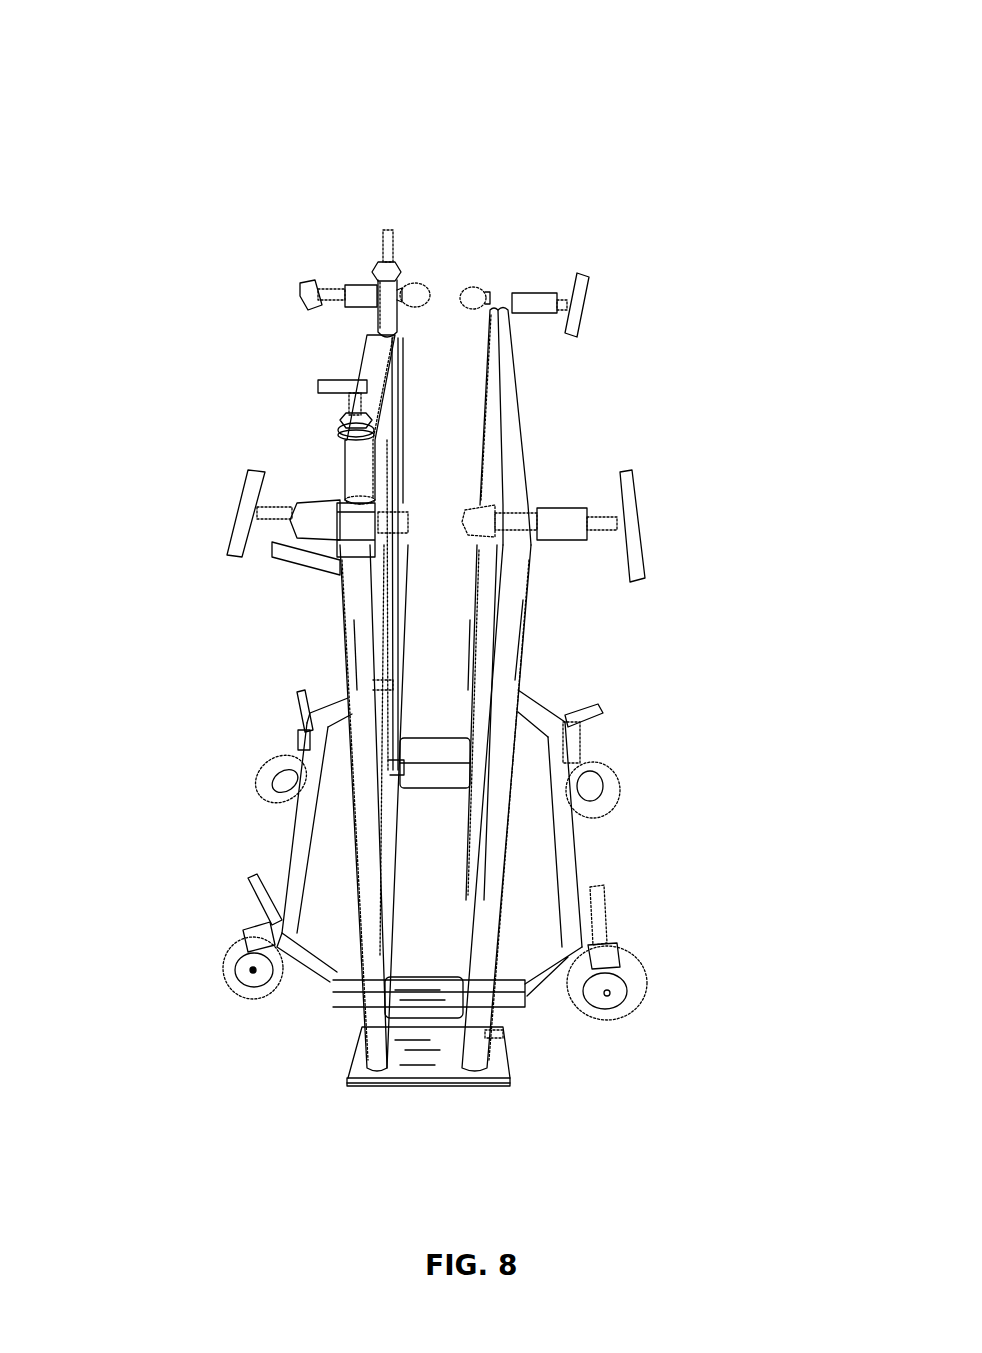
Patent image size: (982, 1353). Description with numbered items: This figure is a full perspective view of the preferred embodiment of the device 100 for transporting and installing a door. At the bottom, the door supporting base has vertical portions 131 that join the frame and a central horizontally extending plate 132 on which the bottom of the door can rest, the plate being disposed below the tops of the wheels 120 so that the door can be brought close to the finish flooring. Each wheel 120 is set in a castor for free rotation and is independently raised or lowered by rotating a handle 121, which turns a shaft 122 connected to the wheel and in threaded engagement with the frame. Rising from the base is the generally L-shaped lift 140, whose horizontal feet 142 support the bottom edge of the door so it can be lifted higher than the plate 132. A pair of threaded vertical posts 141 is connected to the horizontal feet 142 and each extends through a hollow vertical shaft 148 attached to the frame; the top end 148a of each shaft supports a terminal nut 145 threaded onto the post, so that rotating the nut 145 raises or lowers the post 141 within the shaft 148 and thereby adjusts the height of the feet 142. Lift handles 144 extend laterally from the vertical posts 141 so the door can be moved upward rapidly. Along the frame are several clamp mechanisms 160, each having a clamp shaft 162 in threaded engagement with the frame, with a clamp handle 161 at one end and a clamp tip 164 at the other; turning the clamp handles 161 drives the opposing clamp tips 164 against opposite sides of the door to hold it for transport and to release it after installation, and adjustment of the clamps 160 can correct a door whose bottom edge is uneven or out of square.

The device 100 is at (218, 140).
The wheels 120 is at (257, 787).
The handle 121 is at (293, 700).
The shaft 122 is at (250, 920).
The vertical portions 131 is at (363, 1047).
The horizontally extending plate 132 is at (422, 1063).
The lift 140 is at (185, 628).
The vertical posts 141 is at (390, 443).
The horizontal feet 142 is at (427, 770).
The lift handles 144 is at (330, 380).
The terminal nut 145 is at (398, 262).
The hollow vertical shaft 148 is at (390, 313).
The top end 148a is at (376, 267).
The clamp mechanism 160 is at (150, 247).
The clamp handles 161 is at (300, 284).
The clamp shafts 162 is at (303, 268).
The clamp tips 164 is at (433, 280).